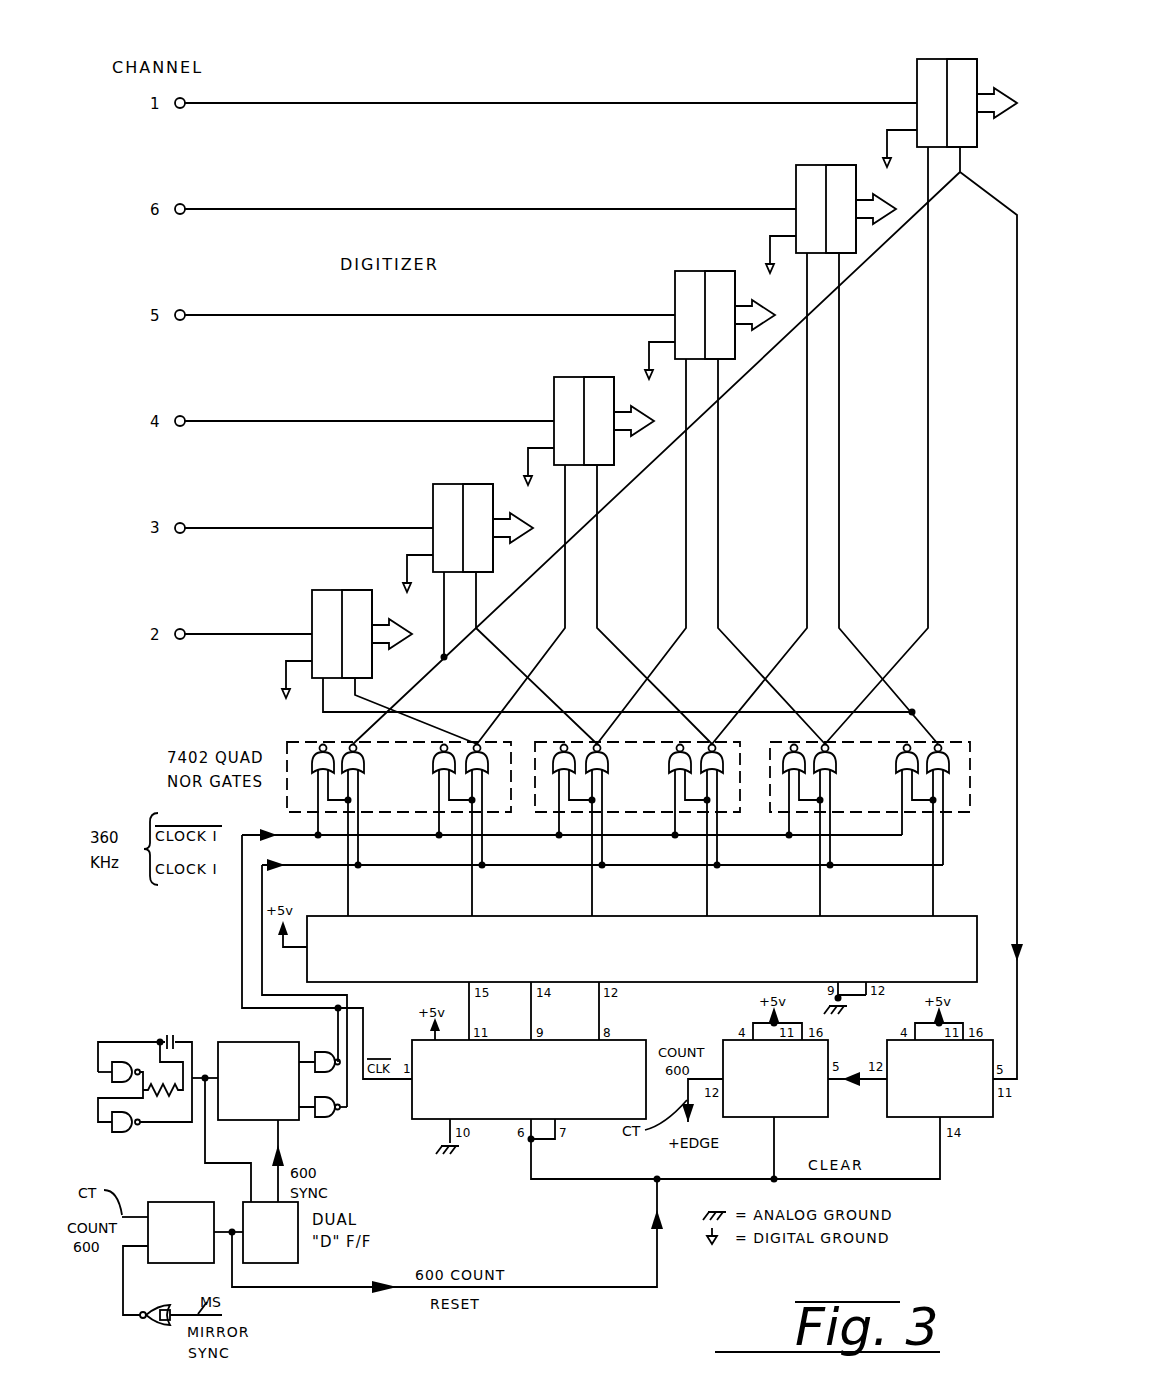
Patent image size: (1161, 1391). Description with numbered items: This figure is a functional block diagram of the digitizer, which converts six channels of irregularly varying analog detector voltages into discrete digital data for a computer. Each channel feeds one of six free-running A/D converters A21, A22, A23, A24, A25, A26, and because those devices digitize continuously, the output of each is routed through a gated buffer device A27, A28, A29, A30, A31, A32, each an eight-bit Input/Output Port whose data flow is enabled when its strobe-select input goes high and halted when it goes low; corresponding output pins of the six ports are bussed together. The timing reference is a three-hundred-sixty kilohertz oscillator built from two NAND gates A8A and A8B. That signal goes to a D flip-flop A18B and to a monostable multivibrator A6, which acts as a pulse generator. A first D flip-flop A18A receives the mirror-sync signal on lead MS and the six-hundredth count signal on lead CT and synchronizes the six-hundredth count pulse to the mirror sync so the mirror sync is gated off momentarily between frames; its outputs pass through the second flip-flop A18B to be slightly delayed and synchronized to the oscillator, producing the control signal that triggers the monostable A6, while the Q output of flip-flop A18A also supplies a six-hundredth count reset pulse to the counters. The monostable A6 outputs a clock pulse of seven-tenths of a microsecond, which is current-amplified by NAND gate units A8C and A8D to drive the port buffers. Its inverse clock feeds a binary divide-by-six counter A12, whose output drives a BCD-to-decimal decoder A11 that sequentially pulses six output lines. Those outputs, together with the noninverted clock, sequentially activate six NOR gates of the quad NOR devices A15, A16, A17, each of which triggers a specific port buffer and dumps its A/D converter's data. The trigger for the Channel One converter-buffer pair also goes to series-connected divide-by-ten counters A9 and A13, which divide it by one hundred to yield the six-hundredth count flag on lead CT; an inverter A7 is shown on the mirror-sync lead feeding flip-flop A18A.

The A/D converter A21 is at (925, 59).
The A/D converter A22 is at (683, 271).
The A/D converter A23 is at (442, 484).
The A/D converter A24 is at (805, 165).
The A/D converter A25 is at (562, 377).
The A/D converter A26 is at (322, 590).
The 8212 Input/Output Port buffer device A27 is at (953, 59).
The 8212 Input/Output Port buffer device A28 is at (840, 165).
The 8212 Input/Output Port buffer device A29 is at (717, 271).
The 8212 Input/Output Port buffer device A30 is at (596, 377).
The 8212 Input/Output Port buffer device A31 is at (476, 484).
The 8212 Input/Output Port buffer device A32 is at (355, 590).
The 7402 Quad NOR Gate device A15 is at (399, 829).
The 7402 Quad NOR Gate device A16 is at (637, 829).
The 7402 Quad NOR Gate device A17 is at (870, 829).
The 7442 BCD-to-Decimal Decoder A11 is at (642, 941).
The 7492 Binary Divide-by-6 Counter A12 is at (529, 1079).
The 74192 Divide-by-10 Counter A9 is at (775, 1078).
The 74192 Divide-by-10 Counter A13 is at (940, 1078).
The 74121 Monostable Multivibrator A6 is at (236, 1042).
The 2-Input 7400 NAND Gate A8A is at (155, 1014).
The 2-Input 7400 NAND Gate A8B is at (135, 1130).
The 7400 Quad 2-Input NAND Gate unit A8C is at (321, 1052).
The 7400 Quad 2-Input NAND Gate unit A8D is at (328, 1118).
The "D" flip-flop A18A is at (190, 1202).
The Dual "D" Flip-Flop A18B is at (298, 1250).
The mirror sync inverter A7 is at (163, 1306).